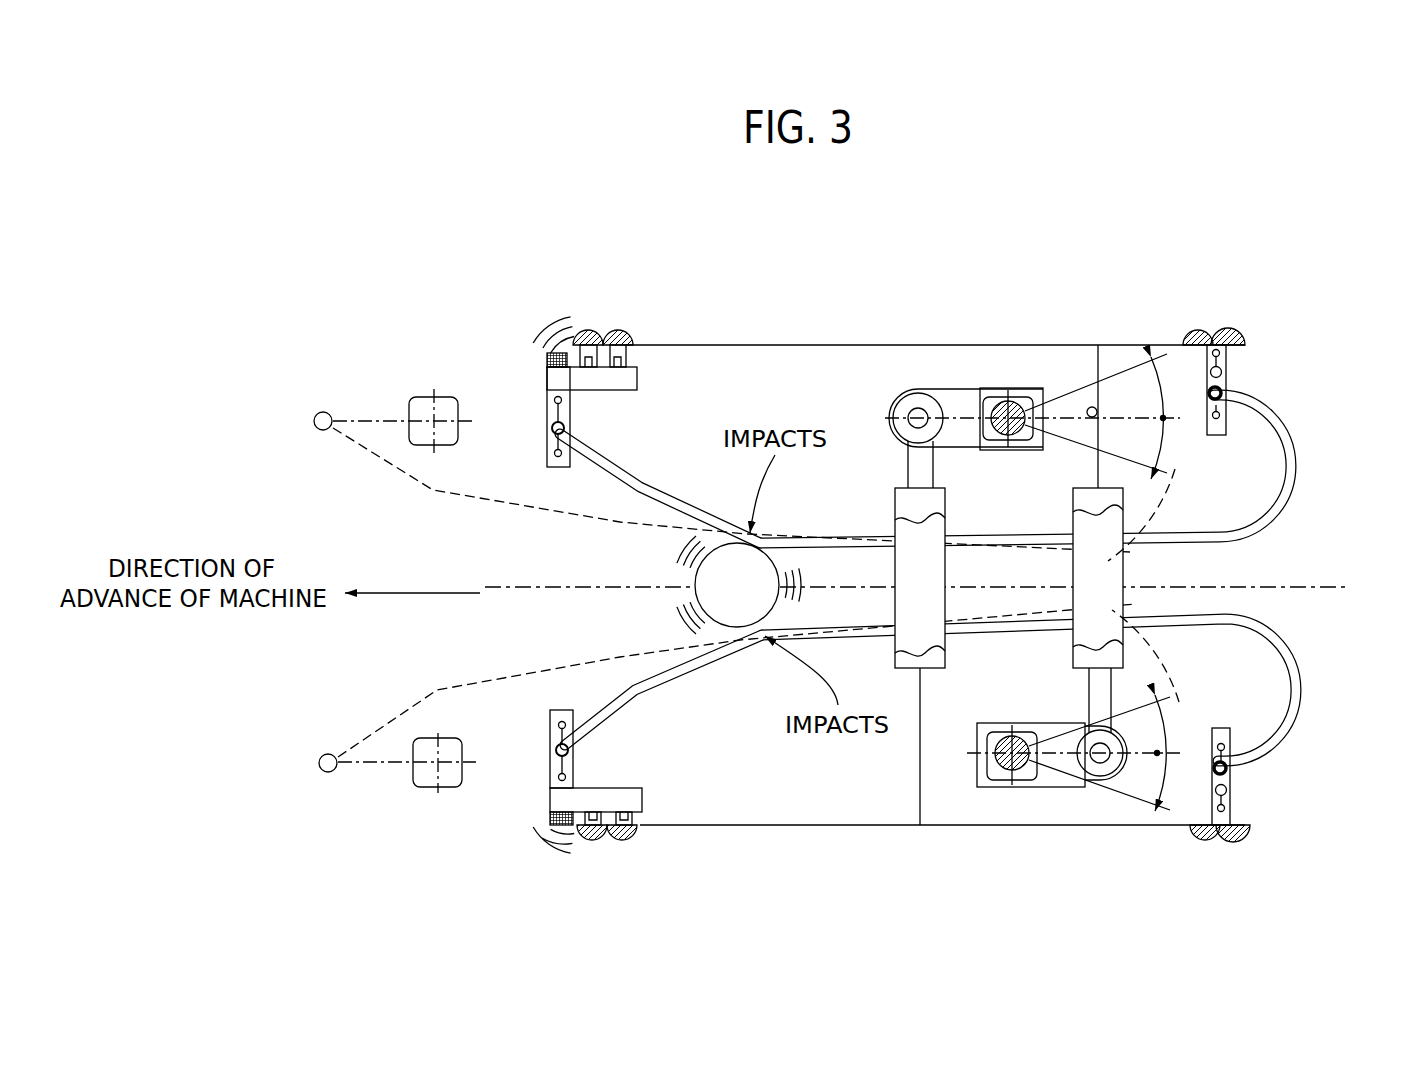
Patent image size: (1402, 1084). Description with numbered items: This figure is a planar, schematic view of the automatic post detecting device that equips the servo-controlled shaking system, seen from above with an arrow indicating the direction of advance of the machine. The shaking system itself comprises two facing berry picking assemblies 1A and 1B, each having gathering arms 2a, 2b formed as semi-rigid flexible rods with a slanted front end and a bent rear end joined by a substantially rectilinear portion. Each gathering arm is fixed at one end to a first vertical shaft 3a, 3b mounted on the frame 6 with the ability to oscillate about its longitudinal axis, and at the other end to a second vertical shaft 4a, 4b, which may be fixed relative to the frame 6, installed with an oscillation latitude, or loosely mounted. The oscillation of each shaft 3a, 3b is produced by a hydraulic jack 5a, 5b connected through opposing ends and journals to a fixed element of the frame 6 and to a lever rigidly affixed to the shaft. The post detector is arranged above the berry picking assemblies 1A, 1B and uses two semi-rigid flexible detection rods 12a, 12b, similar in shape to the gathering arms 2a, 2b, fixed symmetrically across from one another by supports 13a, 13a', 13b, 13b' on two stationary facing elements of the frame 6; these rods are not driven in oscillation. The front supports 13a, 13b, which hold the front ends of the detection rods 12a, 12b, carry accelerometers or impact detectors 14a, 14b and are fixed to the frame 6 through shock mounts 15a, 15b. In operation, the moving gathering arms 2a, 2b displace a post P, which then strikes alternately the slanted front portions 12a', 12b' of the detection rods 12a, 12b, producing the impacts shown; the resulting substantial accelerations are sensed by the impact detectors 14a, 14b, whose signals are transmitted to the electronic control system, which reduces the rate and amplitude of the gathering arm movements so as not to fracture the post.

The berry picking assembly 1A is at (983, 800).
The berry picking assembly 1B is at (1003, 371).
The gathering arm 2a is at (366, 730).
The gathering arm 2b is at (624, 520).
The first vertical shaft 3a is at (1020, 762).
The first vertical shaft 3b is at (1000, 430).
The second vertical shaft 4a is at (420, 776).
The second vertical shaft 4b is at (410, 403).
The hydraulic jack 5a is at (1076, 657).
The hydraulic jack 5b is at (912, 503).
The frame 6 is at (880, 331).
The detection rod 12a is at (967, 695).
The detection rod 12b is at (971, 469).
The slanted front portion 12a' is at (663, 764).
The slanted front portion 12b' is at (689, 392).
The support 13a is at (536, 775).
The support 13b is at (538, 411).
The support 13a' is at (1281, 785).
The support 13b' is at (1276, 376).
The impact detector 14a is at (550, 826).
The impact detector 14b is at (547, 353).
The shock mount 15a is at (628, 843).
The shock mount 15b is at (620, 331).
The post P is at (730, 603).